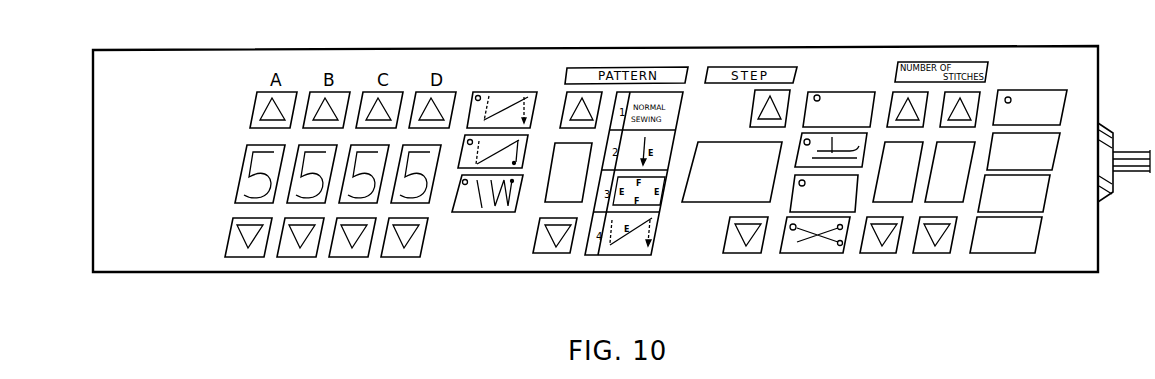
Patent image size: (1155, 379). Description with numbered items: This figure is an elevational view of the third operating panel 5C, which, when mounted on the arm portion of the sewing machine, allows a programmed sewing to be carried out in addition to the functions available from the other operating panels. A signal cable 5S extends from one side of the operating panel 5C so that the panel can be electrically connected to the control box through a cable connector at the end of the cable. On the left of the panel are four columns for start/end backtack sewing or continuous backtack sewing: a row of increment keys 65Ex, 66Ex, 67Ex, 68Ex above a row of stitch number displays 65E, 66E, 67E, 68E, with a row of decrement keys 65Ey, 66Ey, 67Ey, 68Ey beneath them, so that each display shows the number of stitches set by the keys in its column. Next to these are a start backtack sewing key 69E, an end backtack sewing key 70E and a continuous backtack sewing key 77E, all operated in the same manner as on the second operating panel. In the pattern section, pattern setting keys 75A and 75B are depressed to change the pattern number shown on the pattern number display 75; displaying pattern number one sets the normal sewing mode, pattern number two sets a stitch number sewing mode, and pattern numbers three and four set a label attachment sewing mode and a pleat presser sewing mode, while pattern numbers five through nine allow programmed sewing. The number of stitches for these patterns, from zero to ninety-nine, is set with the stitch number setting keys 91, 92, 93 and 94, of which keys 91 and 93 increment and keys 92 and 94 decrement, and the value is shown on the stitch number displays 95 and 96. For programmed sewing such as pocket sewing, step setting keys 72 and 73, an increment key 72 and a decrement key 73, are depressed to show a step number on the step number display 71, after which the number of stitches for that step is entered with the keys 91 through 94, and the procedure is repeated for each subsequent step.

The operating panel 5C is at (538, 58).
The signal cable 5S is at (1131, 158).
The stitch number display 65E is at (243, 173).
The stitch number display 66E is at (299, 158).
The stitch number display 67E is at (381, 205).
The stitch number display 68E is at (436, 192).
The increment key 65Ex is at (255, 97).
The increment key 66Ex is at (315, 91).
The increment key 67Ex is at (371, 90).
The increment key 68Ex is at (421, 92).
The decrement key 65Ey is at (230, 236).
The decrement key 66Ey is at (295, 257).
The decrement key 67Ey is at (347, 257).
The decrement key 68Ey is at (414, 257).
The start backtack sewing key 69E is at (490, 91).
The end backtack sewing key 70E is at (527, 160).
The continuous backtack sewing key 77E is at (467, 213).
The pattern number display 75 is at (583, 192).
The pattern setting key 75A is at (562, 97).
The pattern setting key 75B is at (562, 255).
The step number display 71 is at (712, 202).
The increment key 72 is at (792, 101).
The decrement key 73 is at (748, 255).
The increment key 91 is at (891, 101).
The decrement key 92 is at (887, 255).
The increment key 93 is at (986, 101).
The decrement key 94 is at (922, 255).
The stitch number display 95 is at (872, 196).
The stitch number display 96 is at (966, 190).